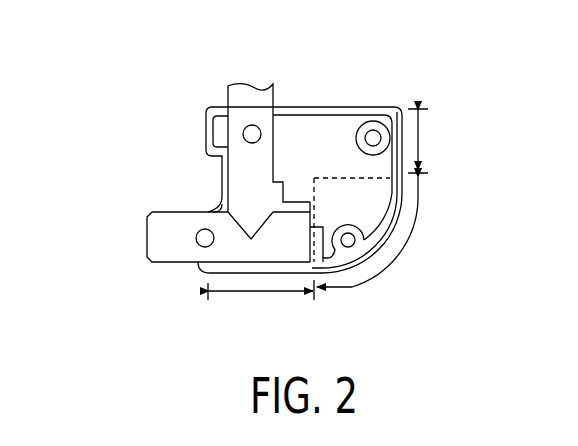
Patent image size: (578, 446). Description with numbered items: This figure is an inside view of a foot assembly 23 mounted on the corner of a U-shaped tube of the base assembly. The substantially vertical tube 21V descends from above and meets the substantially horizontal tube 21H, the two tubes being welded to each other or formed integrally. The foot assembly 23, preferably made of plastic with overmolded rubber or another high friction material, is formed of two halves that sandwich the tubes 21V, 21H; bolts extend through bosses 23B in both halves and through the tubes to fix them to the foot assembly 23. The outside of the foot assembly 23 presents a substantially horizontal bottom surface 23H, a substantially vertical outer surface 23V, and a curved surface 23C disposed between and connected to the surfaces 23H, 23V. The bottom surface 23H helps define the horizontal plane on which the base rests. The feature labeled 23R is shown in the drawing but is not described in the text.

The vertical tube 21V is at (257, 167).
The horizontal tube 21H is at (173, 252).
The foot assembly 23 is at (345, 126).
The vertical outer surface 23V is at (380, 139).
The recessed region of corner bracket 23R is at (312, 207).
The curved surface 23C is at (388, 238).
The boss 23B is at (351, 247).
The horizontal bottom surface 23H is at (260, 262).